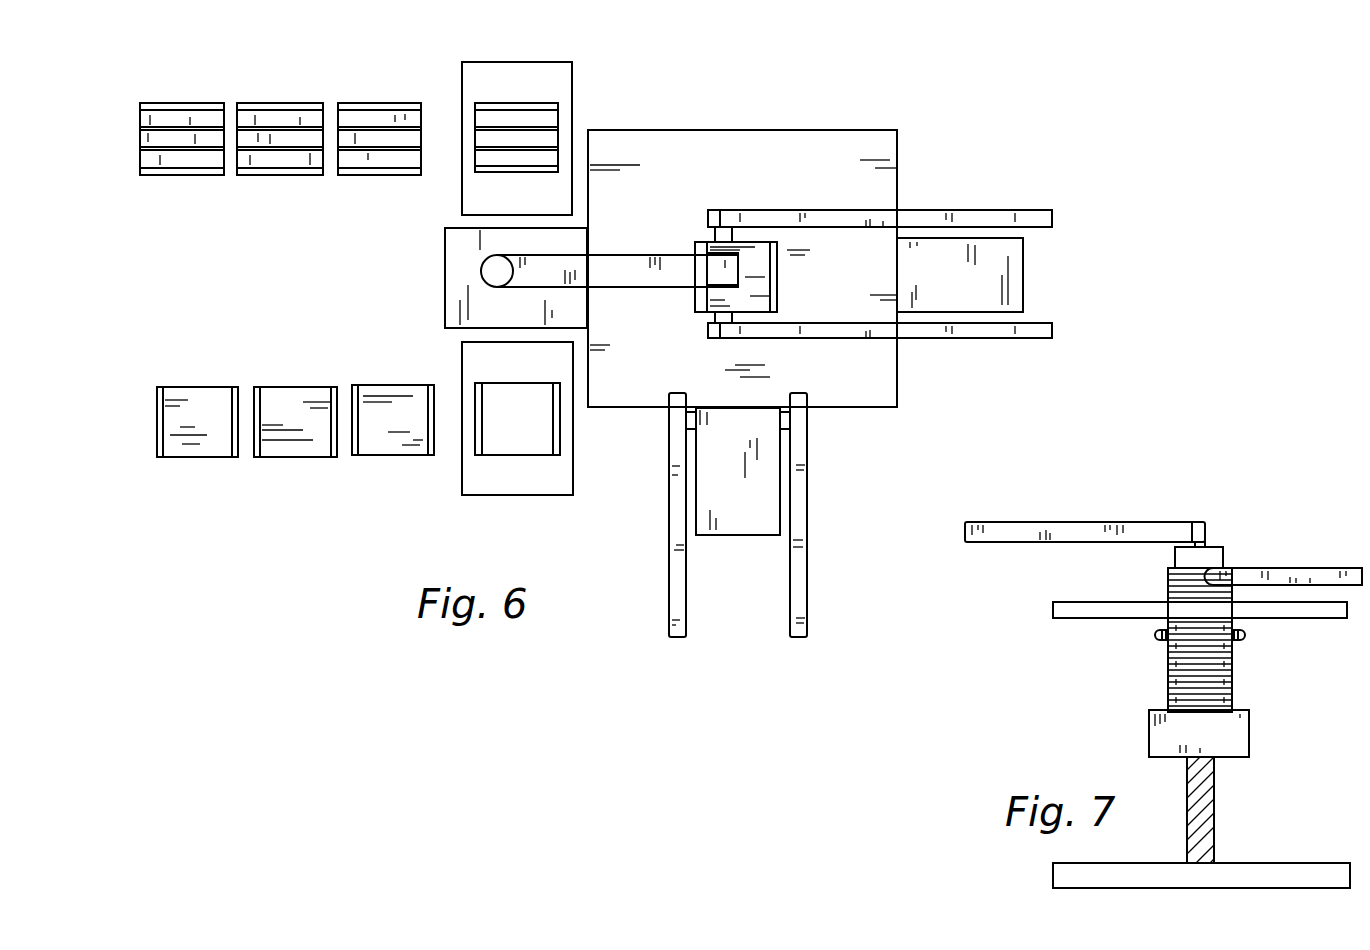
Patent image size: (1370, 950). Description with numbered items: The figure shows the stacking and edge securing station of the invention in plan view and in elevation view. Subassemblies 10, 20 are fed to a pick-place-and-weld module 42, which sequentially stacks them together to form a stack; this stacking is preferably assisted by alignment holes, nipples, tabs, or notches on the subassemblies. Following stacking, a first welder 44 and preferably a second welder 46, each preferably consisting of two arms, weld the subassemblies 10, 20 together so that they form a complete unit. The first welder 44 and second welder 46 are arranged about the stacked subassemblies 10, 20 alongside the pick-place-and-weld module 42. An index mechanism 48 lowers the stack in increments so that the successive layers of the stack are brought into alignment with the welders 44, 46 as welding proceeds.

In FIG. 6, the subassembly 10 is at (384, 457).
In FIG. 6, the subassembly 20 is at (350, 103).
In FIG. 6, the pick-place-and-weld module 42 is at (568, 262).
In FIG. 7, the pick-place-and-weld module 42 is at (1170, 522).
In FIG. 6, the first welder 44 is at (827, 210).
In FIG. 7, the first welder 44 is at (1330, 568).
In FIG. 6, the second welder 46 is at (803, 489).
In FIG. 7, the second welder 46 is at (1333, 620).
In FIG. 7, the index mechanism 48 is at (1252, 780).